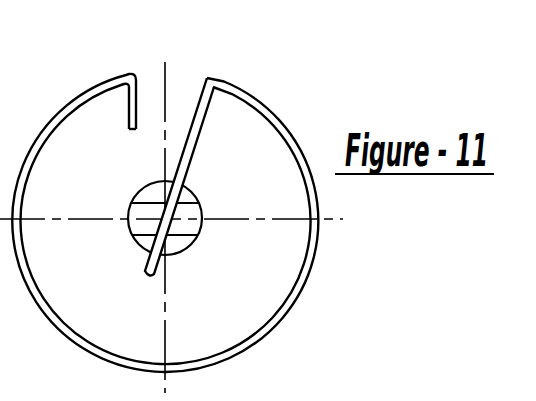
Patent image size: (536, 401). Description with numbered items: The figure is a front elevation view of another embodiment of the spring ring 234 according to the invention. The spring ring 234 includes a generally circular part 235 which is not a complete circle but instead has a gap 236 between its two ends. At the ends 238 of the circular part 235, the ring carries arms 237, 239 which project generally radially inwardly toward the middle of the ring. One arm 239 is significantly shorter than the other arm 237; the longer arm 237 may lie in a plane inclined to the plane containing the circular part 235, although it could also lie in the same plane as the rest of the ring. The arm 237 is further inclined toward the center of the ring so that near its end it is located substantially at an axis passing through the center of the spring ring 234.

The spring ring 234 is at (217, 193).
The circular part 235 is at (314, 262).
The gap 236 is at (163, 80).
The arm 237 is at (188, 165).
The ends of the circular part 238 is at (203, 78).
The arm 239 is at (128, 110).